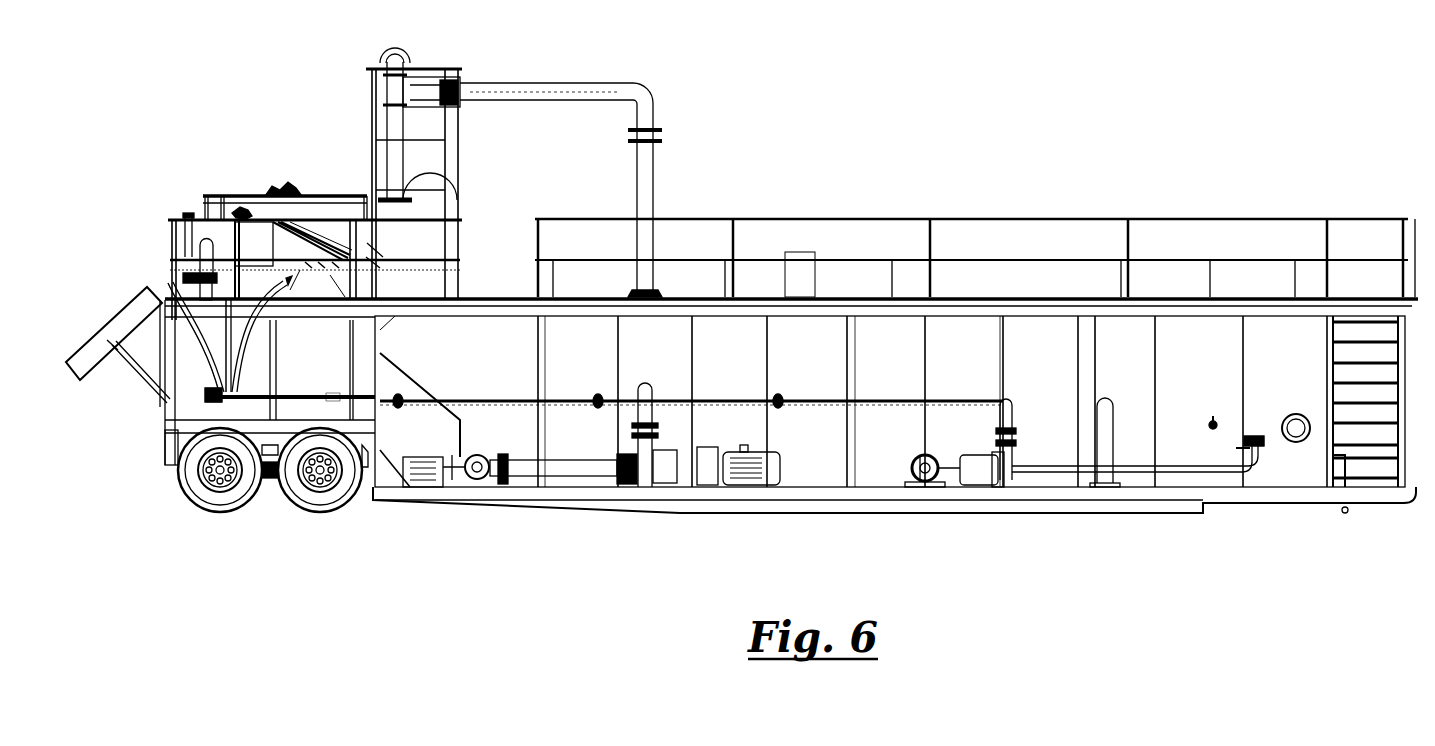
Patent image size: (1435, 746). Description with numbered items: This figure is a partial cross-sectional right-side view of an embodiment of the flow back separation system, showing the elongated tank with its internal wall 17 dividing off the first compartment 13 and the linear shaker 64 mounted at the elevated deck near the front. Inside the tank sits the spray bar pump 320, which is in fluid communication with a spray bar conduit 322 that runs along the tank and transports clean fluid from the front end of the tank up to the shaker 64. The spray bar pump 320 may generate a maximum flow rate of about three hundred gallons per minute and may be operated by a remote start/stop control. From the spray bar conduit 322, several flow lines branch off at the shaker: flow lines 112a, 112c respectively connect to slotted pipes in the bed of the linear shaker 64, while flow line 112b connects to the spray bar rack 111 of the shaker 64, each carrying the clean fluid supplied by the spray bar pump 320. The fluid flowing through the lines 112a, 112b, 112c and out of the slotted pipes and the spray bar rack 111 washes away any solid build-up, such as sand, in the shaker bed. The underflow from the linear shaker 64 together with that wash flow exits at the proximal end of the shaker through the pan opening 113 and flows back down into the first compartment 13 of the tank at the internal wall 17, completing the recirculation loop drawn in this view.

The linear shaker 64 is at (157, 205).
The spray bar rack 111 is at (253, 198).
The flow line 112a is at (203, 333).
The flow line 112b is at (231, 300).
The flow line 112c is at (217, 377).
The pan opening 113 is at (447, 213).
The internal wall 17 is at (385, 350).
The first compartment 13 is at (511, 367).
The spray bar pump 320 is at (920, 485).
The spray bar conduit 322 is at (333, 400).